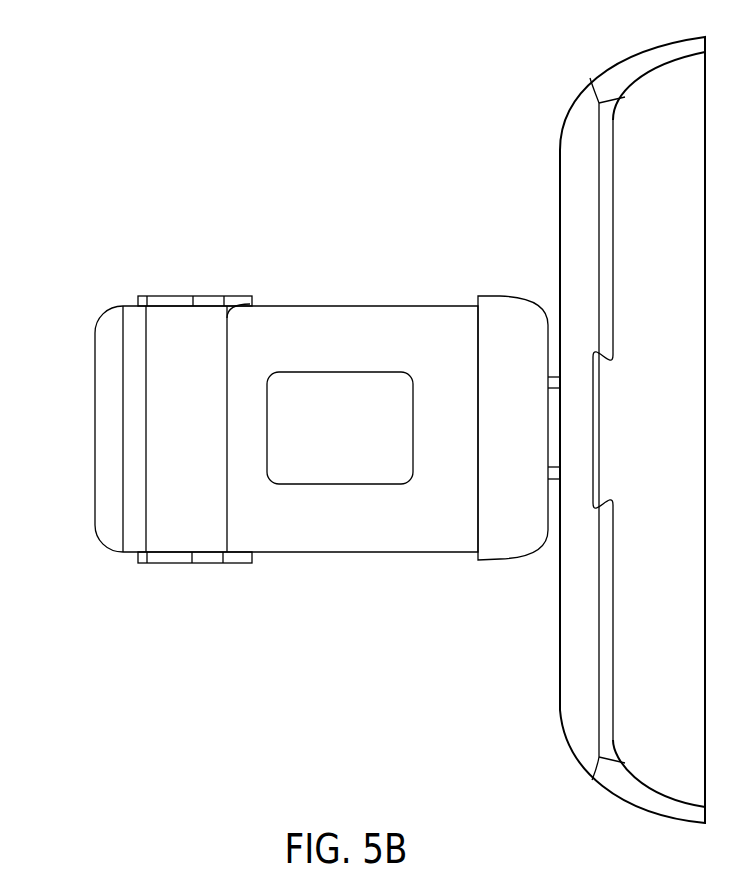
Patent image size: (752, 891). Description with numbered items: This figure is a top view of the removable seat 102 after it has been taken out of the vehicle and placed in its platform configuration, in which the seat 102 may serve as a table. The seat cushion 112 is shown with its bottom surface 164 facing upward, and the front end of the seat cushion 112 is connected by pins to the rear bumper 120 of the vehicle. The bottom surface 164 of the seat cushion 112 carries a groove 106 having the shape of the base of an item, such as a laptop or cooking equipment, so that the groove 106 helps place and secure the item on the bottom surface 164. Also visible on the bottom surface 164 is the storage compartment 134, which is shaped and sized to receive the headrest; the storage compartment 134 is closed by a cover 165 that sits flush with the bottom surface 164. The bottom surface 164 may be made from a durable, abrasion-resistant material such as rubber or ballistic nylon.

The removable seat 102 is at (298, 381).
The groove 106 is at (243, 297).
The seat cushion 112 is at (198, 535).
The rear bumper 120 is at (600, 88).
The storage compartment 134 is at (340, 396).
The bottom surface 164 is at (451, 347).
The cover 165 is at (354, 445).